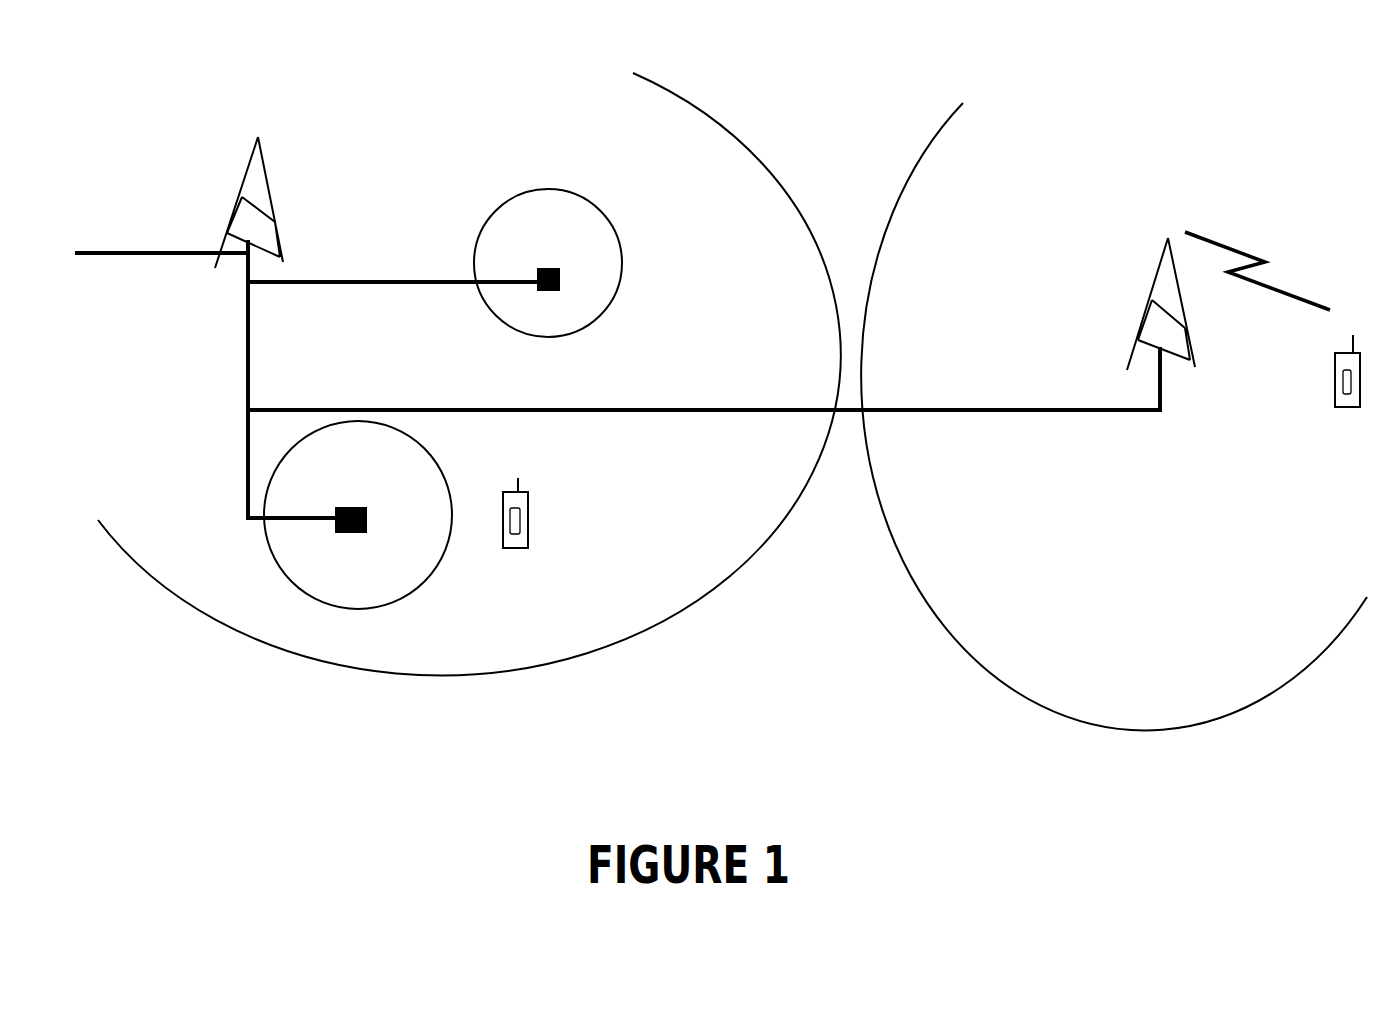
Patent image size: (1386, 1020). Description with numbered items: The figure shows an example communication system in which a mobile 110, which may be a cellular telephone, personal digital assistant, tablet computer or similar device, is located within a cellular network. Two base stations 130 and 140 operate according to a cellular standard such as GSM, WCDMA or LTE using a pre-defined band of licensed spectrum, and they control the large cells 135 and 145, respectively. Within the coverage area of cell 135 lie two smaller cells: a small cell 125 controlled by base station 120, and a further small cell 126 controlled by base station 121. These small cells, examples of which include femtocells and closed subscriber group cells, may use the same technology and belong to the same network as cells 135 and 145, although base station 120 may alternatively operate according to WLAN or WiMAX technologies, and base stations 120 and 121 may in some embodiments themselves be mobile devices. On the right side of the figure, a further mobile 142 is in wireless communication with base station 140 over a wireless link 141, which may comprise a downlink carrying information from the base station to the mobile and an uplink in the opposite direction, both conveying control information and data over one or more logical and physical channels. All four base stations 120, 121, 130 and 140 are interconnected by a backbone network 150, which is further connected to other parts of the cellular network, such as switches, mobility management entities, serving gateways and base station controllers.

The mobile 110 is at (530, 530).
The base station 120 is at (351, 507).
The base station 121 is at (548, 268).
The small cell 125 is at (357, 608).
The further small cell 126 is at (540, 190).
The base station 130 is at (283, 202).
The cell 135 is at (687, 607).
The base station 140 is at (1137, 304).
The wireless link 141 is at (1257, 271).
The further mobile 142 is at (1348, 407).
The cell 145 is at (983, 683).
The backbone network 150 is at (705, 379).